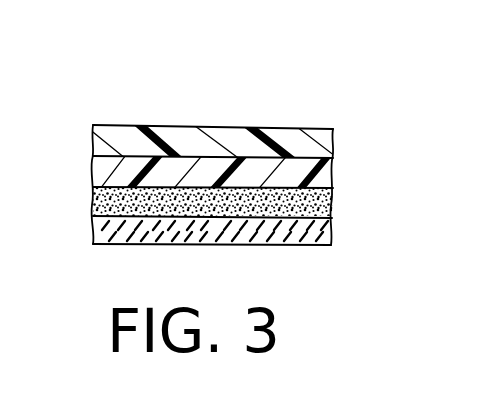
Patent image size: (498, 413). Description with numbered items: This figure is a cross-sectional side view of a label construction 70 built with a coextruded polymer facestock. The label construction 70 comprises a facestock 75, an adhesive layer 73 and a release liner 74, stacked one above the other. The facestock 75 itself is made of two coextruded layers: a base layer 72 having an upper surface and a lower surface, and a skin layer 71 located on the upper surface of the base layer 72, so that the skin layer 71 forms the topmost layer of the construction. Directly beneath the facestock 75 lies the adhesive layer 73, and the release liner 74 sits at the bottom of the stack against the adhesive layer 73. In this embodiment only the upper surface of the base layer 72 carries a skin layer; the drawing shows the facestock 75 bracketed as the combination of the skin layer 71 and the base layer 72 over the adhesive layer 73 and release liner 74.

The label construction 70 is at (324, 118).
The skin layer 71 is at (336, 145).
The base layer 72 is at (334, 181).
The adhesive layer 73 is at (334, 218).
The release liner 74 is at (334, 237).
The facestock 75 is at (87, 128).